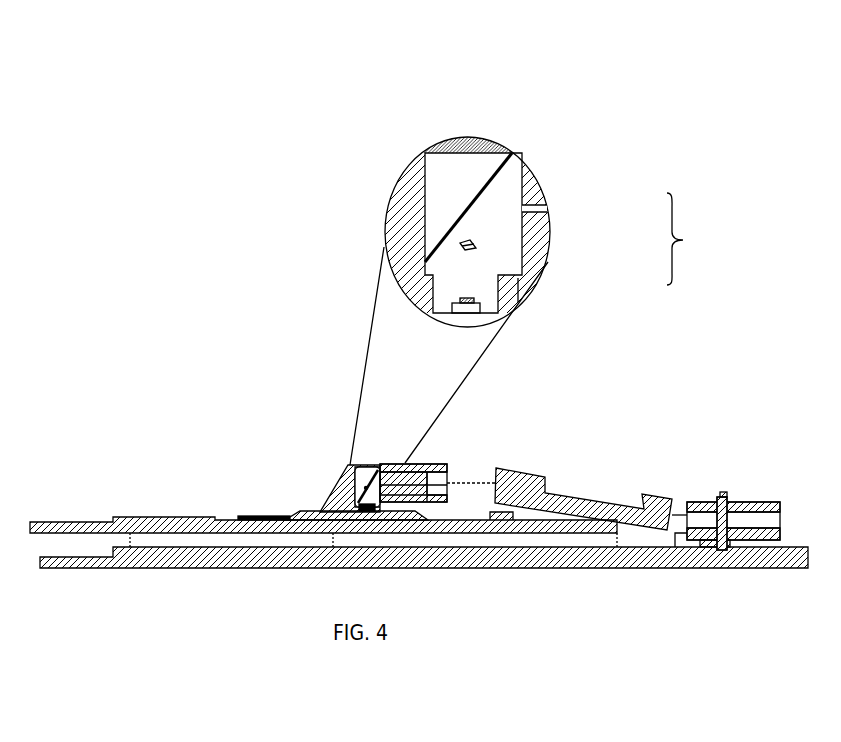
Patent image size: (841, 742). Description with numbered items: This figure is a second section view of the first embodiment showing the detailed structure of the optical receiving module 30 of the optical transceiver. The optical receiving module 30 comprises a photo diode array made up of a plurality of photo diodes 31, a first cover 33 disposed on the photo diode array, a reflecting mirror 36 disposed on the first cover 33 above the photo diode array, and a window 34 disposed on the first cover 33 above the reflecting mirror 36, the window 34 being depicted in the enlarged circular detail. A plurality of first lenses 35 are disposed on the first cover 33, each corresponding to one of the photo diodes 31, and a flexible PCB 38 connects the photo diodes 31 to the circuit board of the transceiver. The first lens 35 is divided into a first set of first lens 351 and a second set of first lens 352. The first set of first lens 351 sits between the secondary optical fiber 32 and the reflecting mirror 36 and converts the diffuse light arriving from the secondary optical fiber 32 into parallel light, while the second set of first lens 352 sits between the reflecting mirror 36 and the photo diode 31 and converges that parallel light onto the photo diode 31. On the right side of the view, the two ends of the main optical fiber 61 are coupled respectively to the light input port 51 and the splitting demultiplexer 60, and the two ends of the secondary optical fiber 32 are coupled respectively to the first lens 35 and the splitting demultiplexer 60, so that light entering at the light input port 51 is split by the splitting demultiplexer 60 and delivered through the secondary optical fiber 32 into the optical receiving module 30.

The optical receiving module 30 is at (336, 478).
The photo diode 31 is at (468, 312).
The secondary optical fiber 32 is at (475, 482).
The first cover 33 is at (320, 508).
The window 34 is at (452, 139).
The first lens 35 is at (688, 239).
The first set of first lens 351 is at (548, 204).
The second set of first lens 352 is at (473, 247).
The reflecting mirror 36 is at (483, 183).
The flexible PCB 38 is at (253, 516).
The light input port 51 is at (762, 501).
The splitting demultiplexer 60 is at (585, 500).
The main optical fiber 61 is at (717, 518).